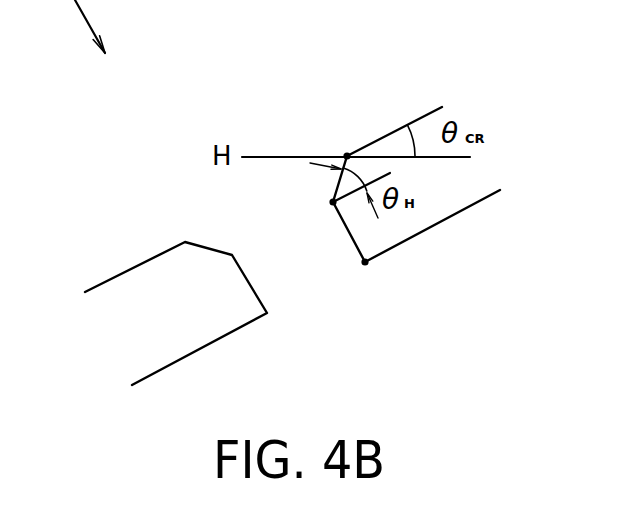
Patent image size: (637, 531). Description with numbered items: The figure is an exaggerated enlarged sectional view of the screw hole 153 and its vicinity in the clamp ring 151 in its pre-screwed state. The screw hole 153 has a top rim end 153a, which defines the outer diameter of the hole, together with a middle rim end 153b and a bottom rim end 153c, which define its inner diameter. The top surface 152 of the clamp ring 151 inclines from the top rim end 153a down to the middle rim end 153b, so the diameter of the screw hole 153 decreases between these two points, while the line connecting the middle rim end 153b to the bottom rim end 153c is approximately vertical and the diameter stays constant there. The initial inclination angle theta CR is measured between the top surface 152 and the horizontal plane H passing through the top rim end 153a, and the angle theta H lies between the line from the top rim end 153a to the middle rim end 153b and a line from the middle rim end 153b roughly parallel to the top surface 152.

The clamp ring 151 is at (137, 288).
The top surface 152 is at (428, 108).
The screw hole 153 is at (315, 293).
The top rim end 153a is at (339, 135).
The middle rim end 153b is at (333, 202).
The bottom rim end 153c is at (365, 262).